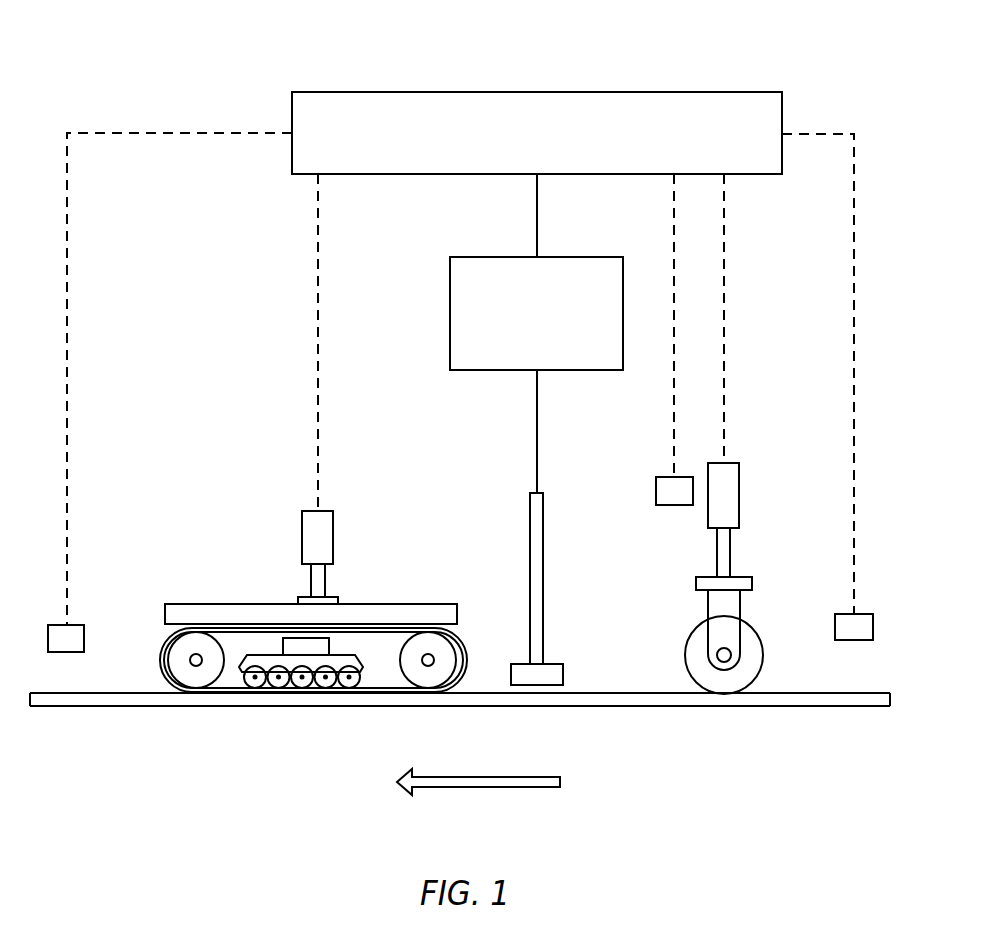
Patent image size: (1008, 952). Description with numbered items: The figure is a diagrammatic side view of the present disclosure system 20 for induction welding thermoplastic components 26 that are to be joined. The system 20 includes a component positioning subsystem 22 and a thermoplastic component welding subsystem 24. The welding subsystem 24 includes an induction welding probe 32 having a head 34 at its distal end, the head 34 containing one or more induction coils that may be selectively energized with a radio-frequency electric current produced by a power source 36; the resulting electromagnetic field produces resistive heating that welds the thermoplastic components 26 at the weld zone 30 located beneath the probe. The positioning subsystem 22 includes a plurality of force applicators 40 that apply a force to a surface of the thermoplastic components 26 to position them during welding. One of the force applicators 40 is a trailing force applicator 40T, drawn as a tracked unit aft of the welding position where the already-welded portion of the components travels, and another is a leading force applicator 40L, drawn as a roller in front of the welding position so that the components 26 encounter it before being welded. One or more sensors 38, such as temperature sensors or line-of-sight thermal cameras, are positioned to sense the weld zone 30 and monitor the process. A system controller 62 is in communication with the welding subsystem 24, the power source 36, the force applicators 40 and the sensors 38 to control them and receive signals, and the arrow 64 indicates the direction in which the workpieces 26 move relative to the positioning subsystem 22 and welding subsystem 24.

The system 20 is at (231, 76).
The system controller 62 is at (620, 91).
The power source 36 is at (450, 322).
The thermoplastic component welding subsystem 24 is at (522, 521).
The induction welding probe 32 is at (556, 592).
The head 34 is at (563, 673).
The weld zone 30 is at (578, 713).
The thermoplastic components 26 is at (775, 707).
The sensors 38 is at (77, 625).
The component positioning subsystem 22 is at (503, 536).
The force applicators 40 is at (503, 536).
The trailing force applicators 40T is at (253, 474).
The leading force applicators 40L is at (798, 407).
The arrow 64 is at (483, 789).